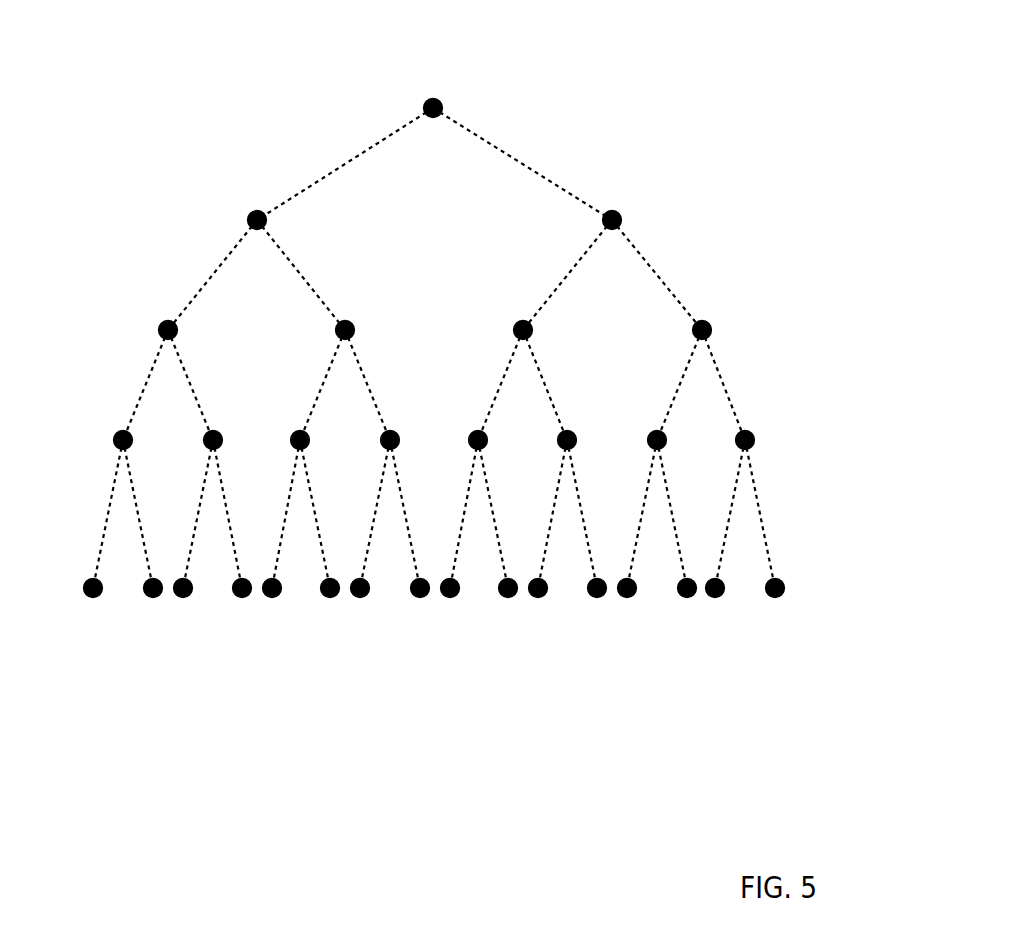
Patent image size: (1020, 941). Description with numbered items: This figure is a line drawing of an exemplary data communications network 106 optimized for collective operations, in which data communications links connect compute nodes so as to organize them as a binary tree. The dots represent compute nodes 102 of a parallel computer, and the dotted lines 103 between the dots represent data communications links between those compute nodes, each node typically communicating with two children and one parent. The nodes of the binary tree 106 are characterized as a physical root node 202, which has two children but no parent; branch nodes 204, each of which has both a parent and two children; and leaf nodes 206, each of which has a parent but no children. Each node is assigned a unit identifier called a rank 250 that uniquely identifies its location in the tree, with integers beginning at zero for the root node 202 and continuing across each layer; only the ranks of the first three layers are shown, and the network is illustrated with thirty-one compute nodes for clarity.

The compute nodes 102 is at (505, 597).
The dotted lines 103 is at (355, 160).
The data communications network 106 is at (469, 437).
The physical root node 202 is at (465, 93).
The branch nodes 204 is at (795, 170).
The leaf nodes 206 is at (795, 625).
The rank 250 is at (561, 232).